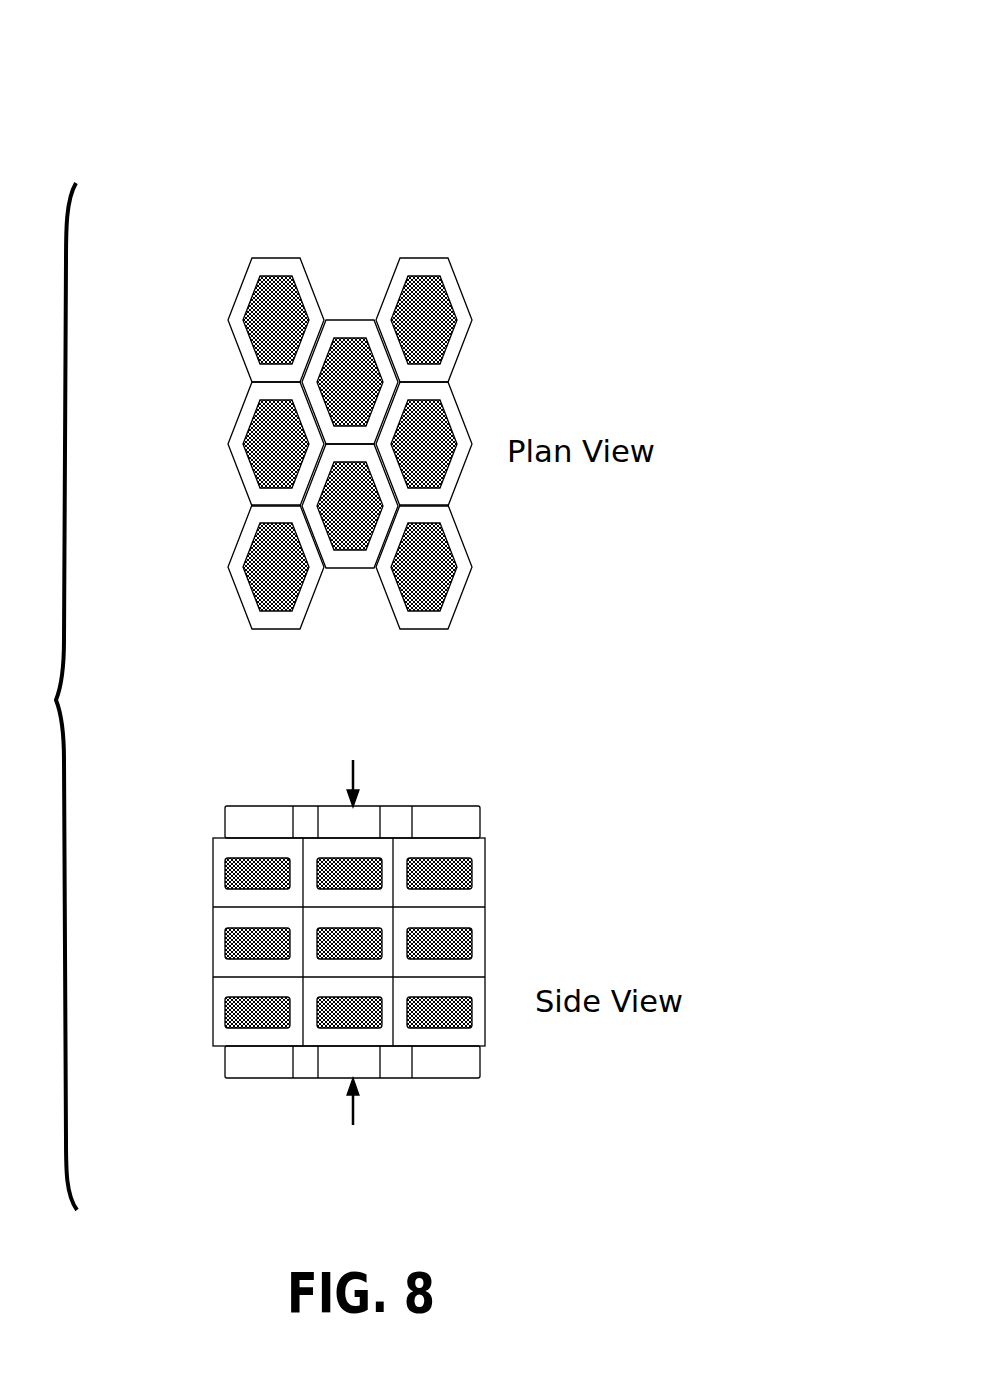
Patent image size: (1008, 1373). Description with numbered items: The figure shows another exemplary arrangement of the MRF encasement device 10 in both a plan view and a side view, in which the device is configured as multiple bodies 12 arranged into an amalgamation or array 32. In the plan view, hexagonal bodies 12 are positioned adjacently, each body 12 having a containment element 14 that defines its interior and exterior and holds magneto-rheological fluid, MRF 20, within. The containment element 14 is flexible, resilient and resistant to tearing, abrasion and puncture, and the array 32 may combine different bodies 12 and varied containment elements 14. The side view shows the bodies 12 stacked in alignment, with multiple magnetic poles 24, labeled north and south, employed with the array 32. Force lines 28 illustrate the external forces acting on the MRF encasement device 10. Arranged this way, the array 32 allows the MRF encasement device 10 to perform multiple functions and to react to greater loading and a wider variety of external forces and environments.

The MRF encasement device 10 is at (240, 122).
The body 12 is at (345, 327).
The containment element 14 is at (458, 482).
The MRF 20 is at (235, 930).
The magnetic poles 24 is at (226, 807).
The force lines 28 is at (351, 770).
The array 32 is at (212, 395).